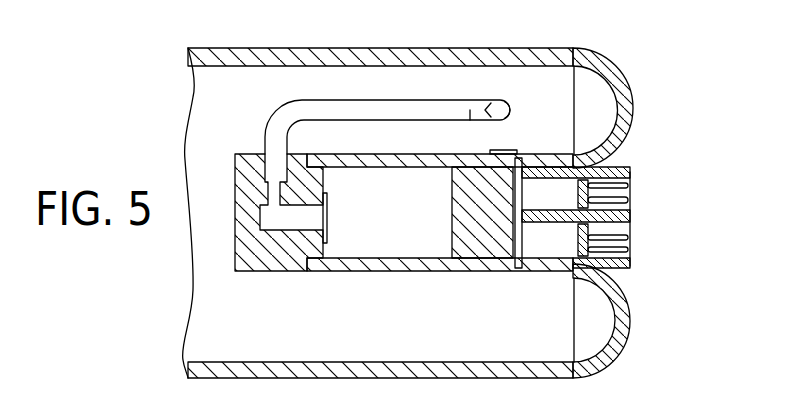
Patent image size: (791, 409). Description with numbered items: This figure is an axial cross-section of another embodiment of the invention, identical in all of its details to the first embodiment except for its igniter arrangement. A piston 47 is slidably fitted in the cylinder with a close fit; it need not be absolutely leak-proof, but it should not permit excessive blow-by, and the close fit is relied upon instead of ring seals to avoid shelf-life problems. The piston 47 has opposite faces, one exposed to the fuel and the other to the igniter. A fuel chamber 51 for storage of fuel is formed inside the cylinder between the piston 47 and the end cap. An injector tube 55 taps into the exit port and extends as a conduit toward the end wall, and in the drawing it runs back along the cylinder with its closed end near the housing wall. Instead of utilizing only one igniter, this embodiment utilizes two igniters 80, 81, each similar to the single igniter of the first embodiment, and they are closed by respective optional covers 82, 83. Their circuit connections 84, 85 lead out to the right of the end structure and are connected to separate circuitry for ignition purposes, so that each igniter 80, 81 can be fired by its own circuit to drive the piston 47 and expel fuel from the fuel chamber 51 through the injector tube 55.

The piston 47 is at (458, 250).
The fuel chamber 51 is at (358, 247).
The injector tube 55 is at (384, 100).
The igniter 80 is at (646, 198).
The igniter 81 is at (646, 237).
The cover 82 is at (531, 156).
The cover 83 is at (517, 250).
The circuit connection 84 is at (632, 185).
The circuit connection 85 is at (632, 250).